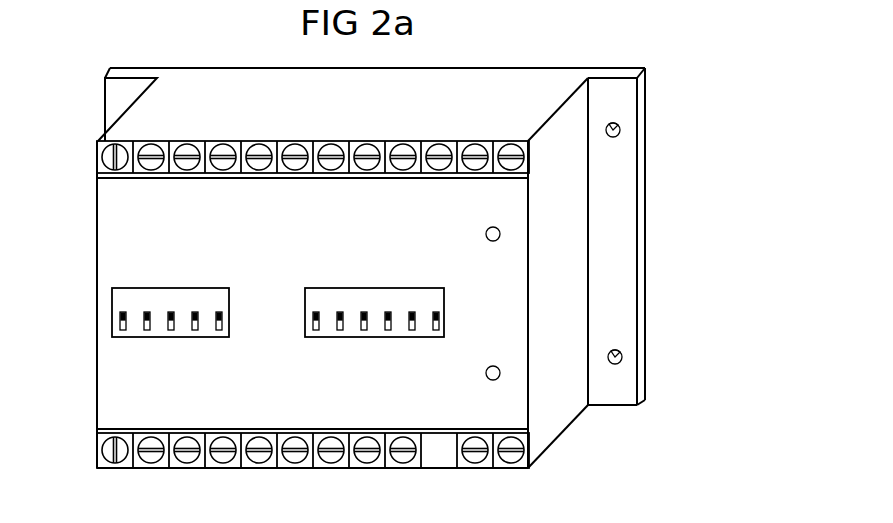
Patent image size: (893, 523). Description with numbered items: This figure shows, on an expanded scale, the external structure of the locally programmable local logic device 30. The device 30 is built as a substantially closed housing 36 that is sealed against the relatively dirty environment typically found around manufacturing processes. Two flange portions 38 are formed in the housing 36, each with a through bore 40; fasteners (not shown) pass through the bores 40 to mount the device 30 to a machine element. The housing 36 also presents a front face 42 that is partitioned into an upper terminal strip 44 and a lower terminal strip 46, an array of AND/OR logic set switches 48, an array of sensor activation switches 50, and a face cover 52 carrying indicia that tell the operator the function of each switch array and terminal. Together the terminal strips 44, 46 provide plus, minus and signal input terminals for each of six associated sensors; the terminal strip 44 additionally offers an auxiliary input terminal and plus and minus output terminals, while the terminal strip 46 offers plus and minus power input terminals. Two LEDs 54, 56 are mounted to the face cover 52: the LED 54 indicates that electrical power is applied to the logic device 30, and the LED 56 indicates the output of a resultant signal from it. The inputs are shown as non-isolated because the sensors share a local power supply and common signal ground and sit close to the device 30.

The local logic device 30 is at (554, 78).
The housing 36 is at (568, 412).
The flange portions 38 is at (110, 95).
The through bores 40 is at (621, 129).
The front face 42 is at (100, 195).
The terminal strip 44 is at (98, 148).
The terminal strip 46 is at (100, 447).
The AND/OR logic set switches 48 is at (115, 328).
The sensor activation switches 50 is at (444, 304).
The face cover 52 is at (105, 272).
The LED 54 is at (500, 371).
The LED 56 is at (500, 233).